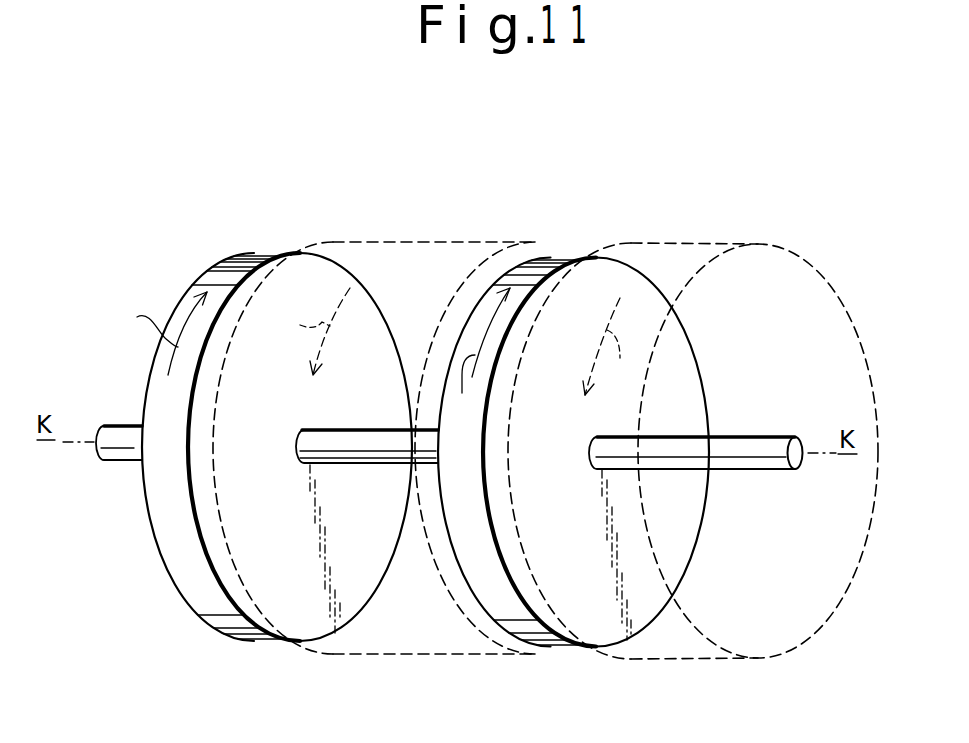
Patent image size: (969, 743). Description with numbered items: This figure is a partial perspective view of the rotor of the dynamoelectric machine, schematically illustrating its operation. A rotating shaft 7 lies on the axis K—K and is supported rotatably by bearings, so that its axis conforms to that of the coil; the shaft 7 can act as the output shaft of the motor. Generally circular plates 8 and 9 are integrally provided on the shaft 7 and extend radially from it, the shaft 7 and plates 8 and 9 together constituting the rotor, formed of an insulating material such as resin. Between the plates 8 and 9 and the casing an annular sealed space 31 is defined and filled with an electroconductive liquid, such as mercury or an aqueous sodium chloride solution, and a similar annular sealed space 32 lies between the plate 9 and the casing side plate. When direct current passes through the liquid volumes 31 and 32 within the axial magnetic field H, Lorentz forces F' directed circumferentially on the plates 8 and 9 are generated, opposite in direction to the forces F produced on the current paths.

The rotating shaft 7 is at (115, 462).
The circular plate 8 is at (242, 641).
The circular plate 9 is at (543, 641).
The annular sealed space 31 is at (400, 241).
The annular sealed space 32 is at (722, 246).